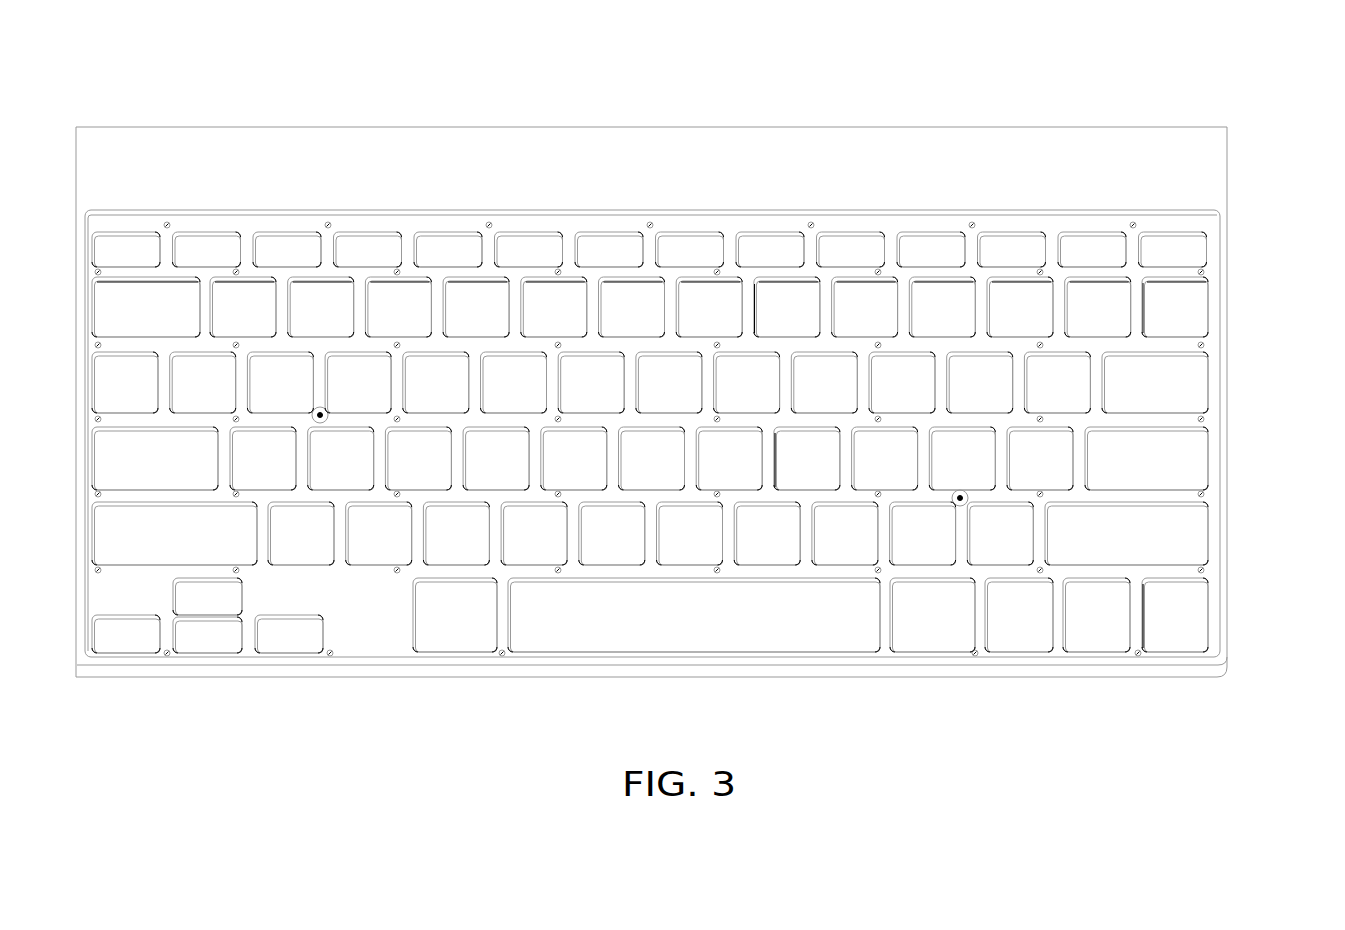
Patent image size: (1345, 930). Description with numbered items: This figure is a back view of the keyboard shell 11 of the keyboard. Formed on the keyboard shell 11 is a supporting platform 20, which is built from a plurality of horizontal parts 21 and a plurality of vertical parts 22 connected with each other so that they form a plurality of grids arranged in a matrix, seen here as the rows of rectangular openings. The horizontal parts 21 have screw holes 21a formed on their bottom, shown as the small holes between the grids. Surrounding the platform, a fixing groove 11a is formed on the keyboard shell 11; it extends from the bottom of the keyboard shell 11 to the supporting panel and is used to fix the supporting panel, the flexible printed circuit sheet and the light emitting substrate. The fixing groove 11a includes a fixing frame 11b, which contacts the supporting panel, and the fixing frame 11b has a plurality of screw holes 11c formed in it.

The keyboard shell 11 is at (1203, 204).
The fixing groove 11a is at (1220, 626).
The fixing frame 11b is at (1049, 223).
The screw holes 11c is at (1133, 219).
The supporting platform 20 is at (718, 442).
The horizontal parts 21 is at (1113, 347).
The screw holes 21a is at (717, 269).
The vertical parts 22 is at (1095, 390).